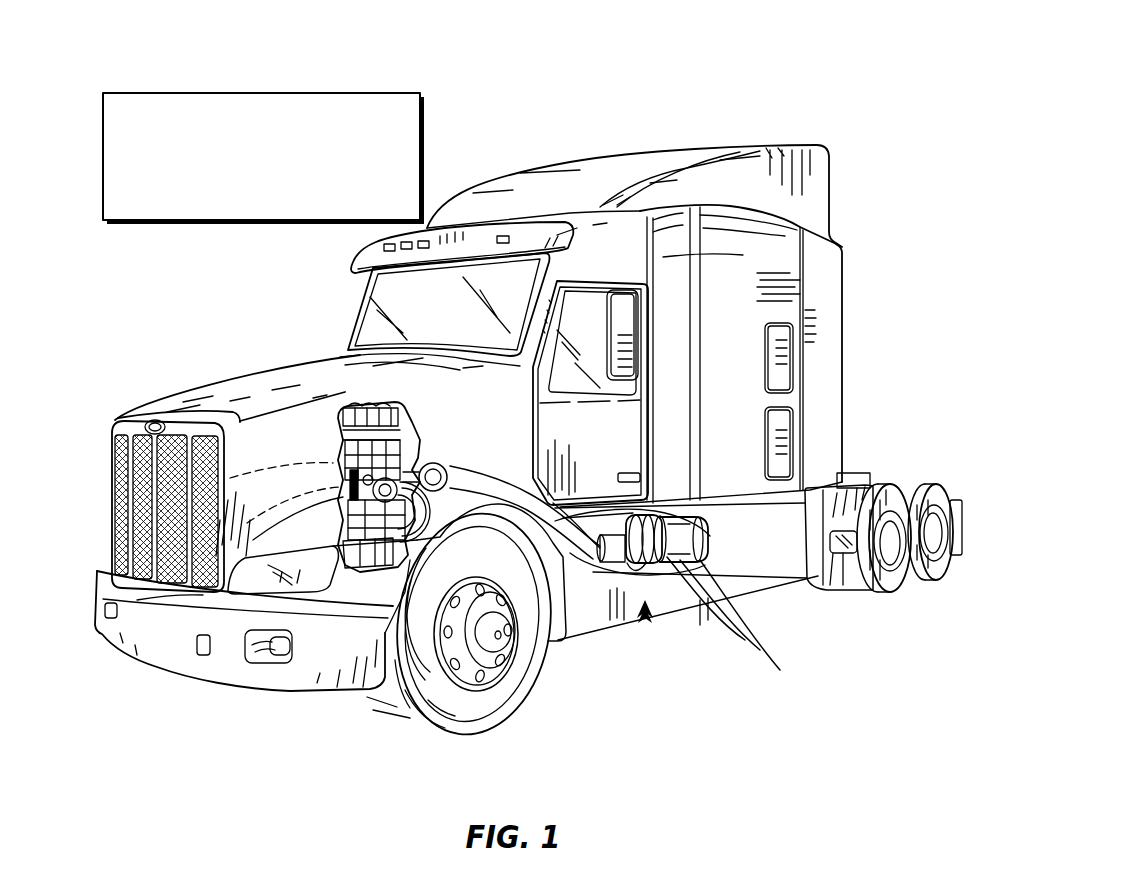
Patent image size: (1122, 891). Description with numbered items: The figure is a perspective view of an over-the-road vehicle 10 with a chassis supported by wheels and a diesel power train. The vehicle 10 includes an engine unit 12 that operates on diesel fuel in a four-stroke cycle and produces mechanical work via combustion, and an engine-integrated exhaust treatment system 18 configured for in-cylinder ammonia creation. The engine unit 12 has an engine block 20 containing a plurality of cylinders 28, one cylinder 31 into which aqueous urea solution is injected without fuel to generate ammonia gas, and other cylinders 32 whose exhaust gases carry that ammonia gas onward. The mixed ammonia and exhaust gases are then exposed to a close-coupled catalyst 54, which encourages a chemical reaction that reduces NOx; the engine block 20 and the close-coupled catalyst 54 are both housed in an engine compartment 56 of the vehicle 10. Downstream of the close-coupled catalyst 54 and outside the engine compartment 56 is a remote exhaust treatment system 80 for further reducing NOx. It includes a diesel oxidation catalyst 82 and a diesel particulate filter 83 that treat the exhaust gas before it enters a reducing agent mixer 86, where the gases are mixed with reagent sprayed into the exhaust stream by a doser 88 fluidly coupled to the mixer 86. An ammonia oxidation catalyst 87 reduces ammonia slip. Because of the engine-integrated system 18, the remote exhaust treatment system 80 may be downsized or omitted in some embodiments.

The over-the-road vehicle 10 is at (802, 60).
The engine unit 12 is at (340, 404).
The engine-integrated exhaust treatment system 18 is at (373, 407).
The engine block 20 is at (416, 419).
The cylinders 28 is at (333, 453).
The cylinder 31 is at (97, 577).
The cylinders 32 is at (140, 597).
The close-coupled catalyst 54 is at (440, 497).
The engine compartment 56 is at (233, 390).
The remote exhaust treatment system 80 is at (645, 602).
The diesel oxidation catalyst 82 is at (637, 568).
The diesel particulate filter 83 is at (780, 670).
The reducing agent mixer 86 is at (760, 650).
The ammonia oxidation catalyst 87 is at (745, 640).
The doser 88 is at (657, 517).